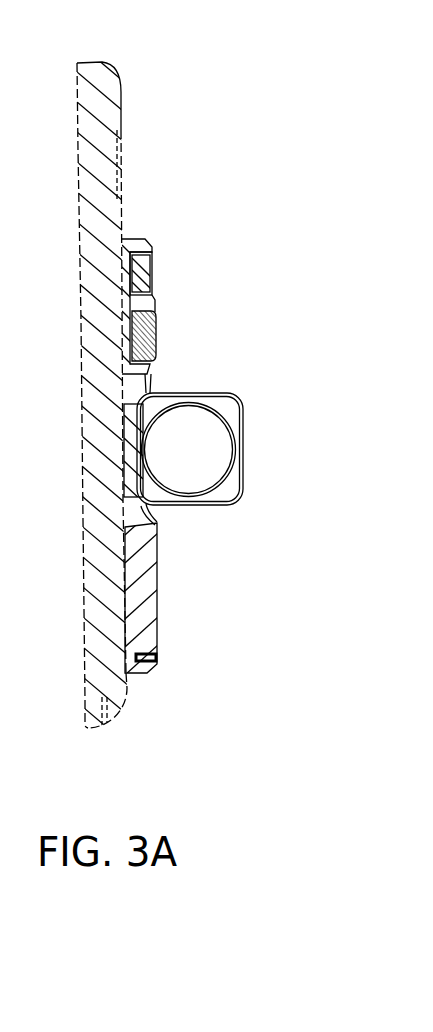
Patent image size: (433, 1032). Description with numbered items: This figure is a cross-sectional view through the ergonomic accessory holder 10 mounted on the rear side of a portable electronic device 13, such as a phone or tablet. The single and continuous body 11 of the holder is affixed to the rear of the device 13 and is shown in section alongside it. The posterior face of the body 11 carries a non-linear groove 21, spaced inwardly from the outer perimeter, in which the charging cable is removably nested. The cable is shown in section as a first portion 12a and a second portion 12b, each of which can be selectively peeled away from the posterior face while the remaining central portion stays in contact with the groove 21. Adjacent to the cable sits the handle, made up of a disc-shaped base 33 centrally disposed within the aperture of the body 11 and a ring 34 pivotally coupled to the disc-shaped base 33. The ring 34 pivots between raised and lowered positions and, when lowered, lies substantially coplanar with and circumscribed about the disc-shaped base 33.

The portable electronic device 13 is at (110, 63).
The ergonomic accessory holder 10 is at (159, 226).
The second portion of the charging cable 12b is at (153, 269).
The first portion of the charging cable 12a is at (156, 331).
The ring 34 is at (225, 403).
The disc-shaped base 33 is at (135, 473).
The body 11 is at (150, 623).
The groove 21 is at (156, 660).